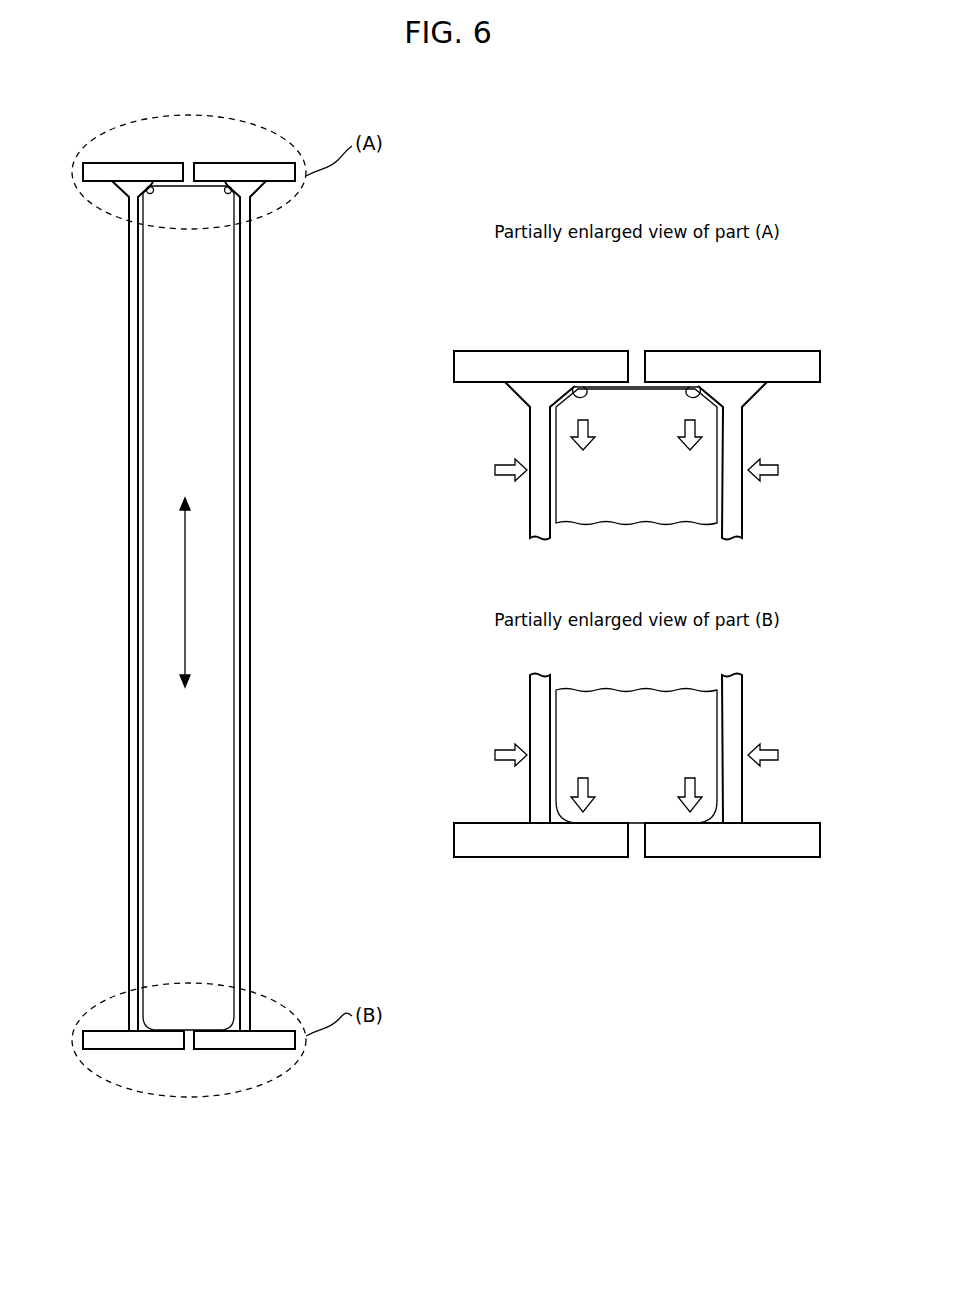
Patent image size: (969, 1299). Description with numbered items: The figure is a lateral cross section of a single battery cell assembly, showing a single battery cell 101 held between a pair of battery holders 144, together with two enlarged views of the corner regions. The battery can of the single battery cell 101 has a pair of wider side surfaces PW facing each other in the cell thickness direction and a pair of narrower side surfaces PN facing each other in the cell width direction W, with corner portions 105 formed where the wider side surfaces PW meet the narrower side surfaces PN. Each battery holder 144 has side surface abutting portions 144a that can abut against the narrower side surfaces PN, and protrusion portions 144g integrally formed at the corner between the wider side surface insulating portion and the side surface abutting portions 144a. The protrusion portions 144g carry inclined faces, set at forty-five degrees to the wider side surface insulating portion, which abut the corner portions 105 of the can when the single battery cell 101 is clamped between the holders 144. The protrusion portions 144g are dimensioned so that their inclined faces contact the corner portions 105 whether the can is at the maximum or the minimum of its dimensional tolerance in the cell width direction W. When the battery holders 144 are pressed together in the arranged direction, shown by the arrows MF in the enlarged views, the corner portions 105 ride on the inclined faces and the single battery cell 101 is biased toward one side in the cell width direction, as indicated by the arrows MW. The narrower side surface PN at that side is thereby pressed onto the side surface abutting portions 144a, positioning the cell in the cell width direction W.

The single battery cell 101 is at (215, 460).
The corner portion 105 is at (560, 386).
The battery holder 144 is at (129, 402).
The side surface abutting portion 144a is at (93, 163).
The protrusion portion 144g is at (152, 186).
The narrower side surface PN is at (188, 180).
The wider side surface PW is at (138, 535).
The biasing direction arrow MW is at (690, 429).
The mold pressing force MF is at (494, 470).
The cell width direction W is at (196, 592).